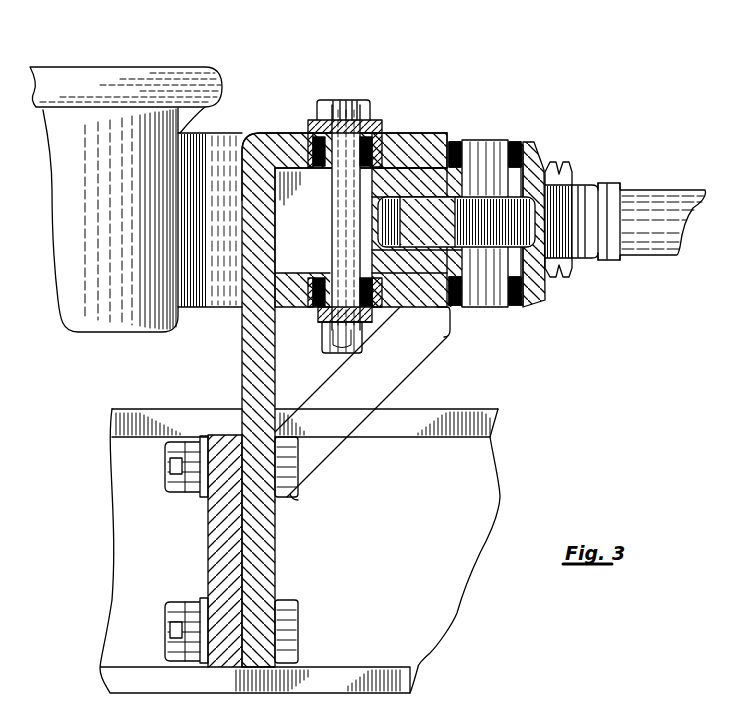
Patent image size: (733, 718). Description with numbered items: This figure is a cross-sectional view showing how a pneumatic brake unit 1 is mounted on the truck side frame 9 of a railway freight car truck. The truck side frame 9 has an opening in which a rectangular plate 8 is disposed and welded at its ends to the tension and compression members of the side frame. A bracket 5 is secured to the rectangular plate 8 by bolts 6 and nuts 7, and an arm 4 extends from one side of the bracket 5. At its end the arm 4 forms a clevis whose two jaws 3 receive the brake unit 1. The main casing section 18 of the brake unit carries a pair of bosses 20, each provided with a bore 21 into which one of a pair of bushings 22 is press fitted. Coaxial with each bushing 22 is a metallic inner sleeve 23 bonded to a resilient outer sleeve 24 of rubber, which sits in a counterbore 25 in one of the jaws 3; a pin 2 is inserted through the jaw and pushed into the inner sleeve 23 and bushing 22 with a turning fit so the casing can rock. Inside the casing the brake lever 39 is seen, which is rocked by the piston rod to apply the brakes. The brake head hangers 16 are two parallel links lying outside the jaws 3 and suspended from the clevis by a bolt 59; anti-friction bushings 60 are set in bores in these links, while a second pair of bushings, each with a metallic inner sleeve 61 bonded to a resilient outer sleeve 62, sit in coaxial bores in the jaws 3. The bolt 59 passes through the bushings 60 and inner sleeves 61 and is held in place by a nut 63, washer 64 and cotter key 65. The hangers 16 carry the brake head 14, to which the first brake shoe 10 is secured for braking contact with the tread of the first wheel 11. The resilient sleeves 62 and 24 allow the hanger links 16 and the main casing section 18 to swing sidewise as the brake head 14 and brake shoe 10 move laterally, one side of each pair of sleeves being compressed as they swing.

The pneumatic brake unit 1 is at (581, 196).
The pins 2 is at (480, 145).
The jaws 3 is at (423, 132).
The arm 4 is at (250, 370).
The bracket 5 is at (272, 548).
The bolts 6 is at (298, 490).
The nuts 7 is at (185, 494).
The rectangular plate 8 is at (215, 548).
The truck side frame 9 is at (455, 445).
The first brake shoe 10 is at (205, 130).
The first wheel 11 is at (130, 80).
The brake head 14 is at (247, 146).
The brake head hangers 16 is at (370, 152).
The main casing section 18 is at (575, 185).
The bosses 20 is at (456, 143).
The bore 21 is at (532, 173).
The bushings 22 is at (515, 152).
The metallic inner sleeve 23 is at (454, 150).
The resilient outer sleeve 24 is at (520, 162).
The counterbore 25 is at (530, 170).
The brake lever 39 is at (432, 205).
The bolt 59 is at (326, 102).
The anti-friction bushings 60 is at (313, 123).
The metallic inner sleeve 61 is at (380, 165).
The resilient outer sleeve 62 is at (315, 137).
The nut 63 is at (335, 355).
The washer 64 is at (320, 324).
The cotter key 65 is at (345, 342).